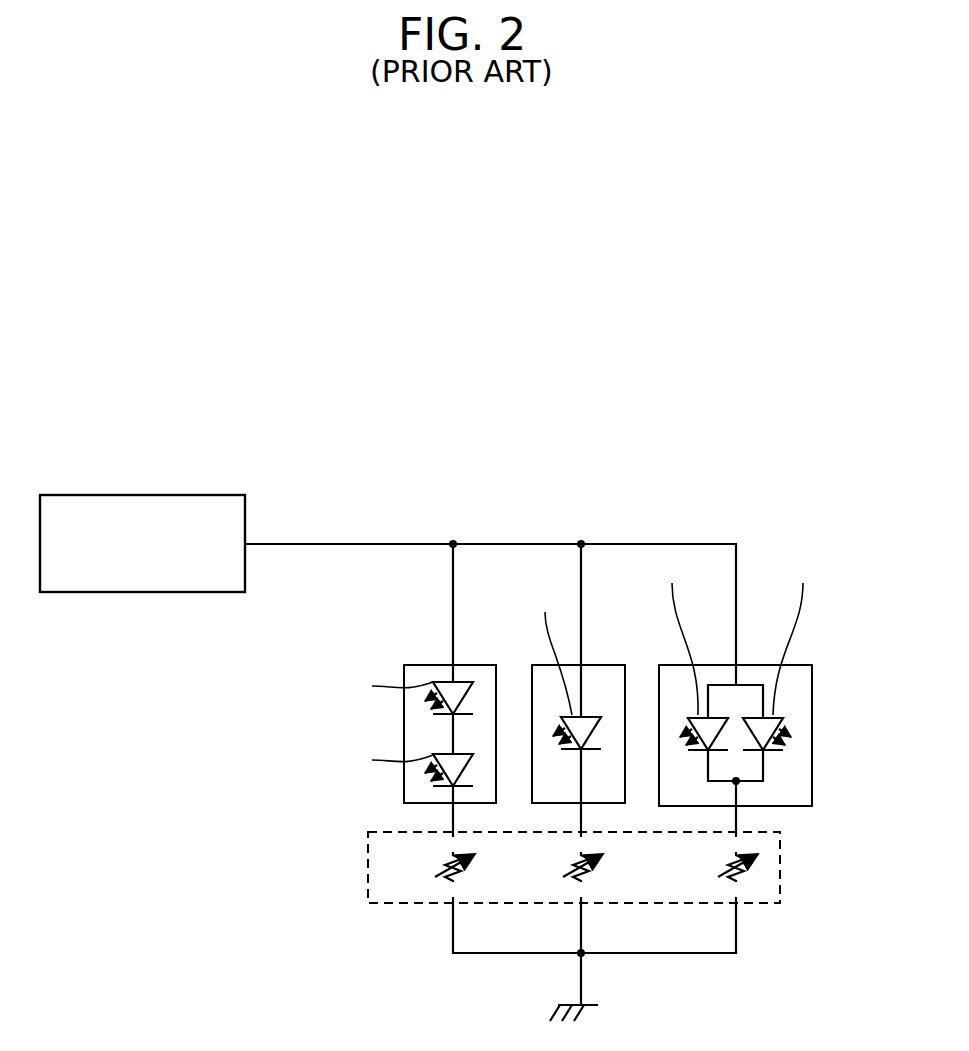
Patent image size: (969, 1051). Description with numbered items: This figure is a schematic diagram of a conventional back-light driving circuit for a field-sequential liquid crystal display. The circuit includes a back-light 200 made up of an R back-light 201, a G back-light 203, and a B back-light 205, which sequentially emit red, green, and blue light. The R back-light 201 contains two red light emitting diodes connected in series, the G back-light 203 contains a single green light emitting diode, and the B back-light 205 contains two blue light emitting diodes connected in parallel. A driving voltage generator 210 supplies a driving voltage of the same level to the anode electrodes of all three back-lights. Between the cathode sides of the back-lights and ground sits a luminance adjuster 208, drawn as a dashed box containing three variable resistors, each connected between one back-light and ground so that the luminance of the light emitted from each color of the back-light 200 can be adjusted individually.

The back-light 200 is at (466, 455).
The R back-light 201 is at (430, 665).
The G back-light 203 is at (603, 665).
The B back-light 205 is at (812, 715).
The luminance adjuster 208 is at (780, 865).
The driving voltage generator 210 is at (97, 593).